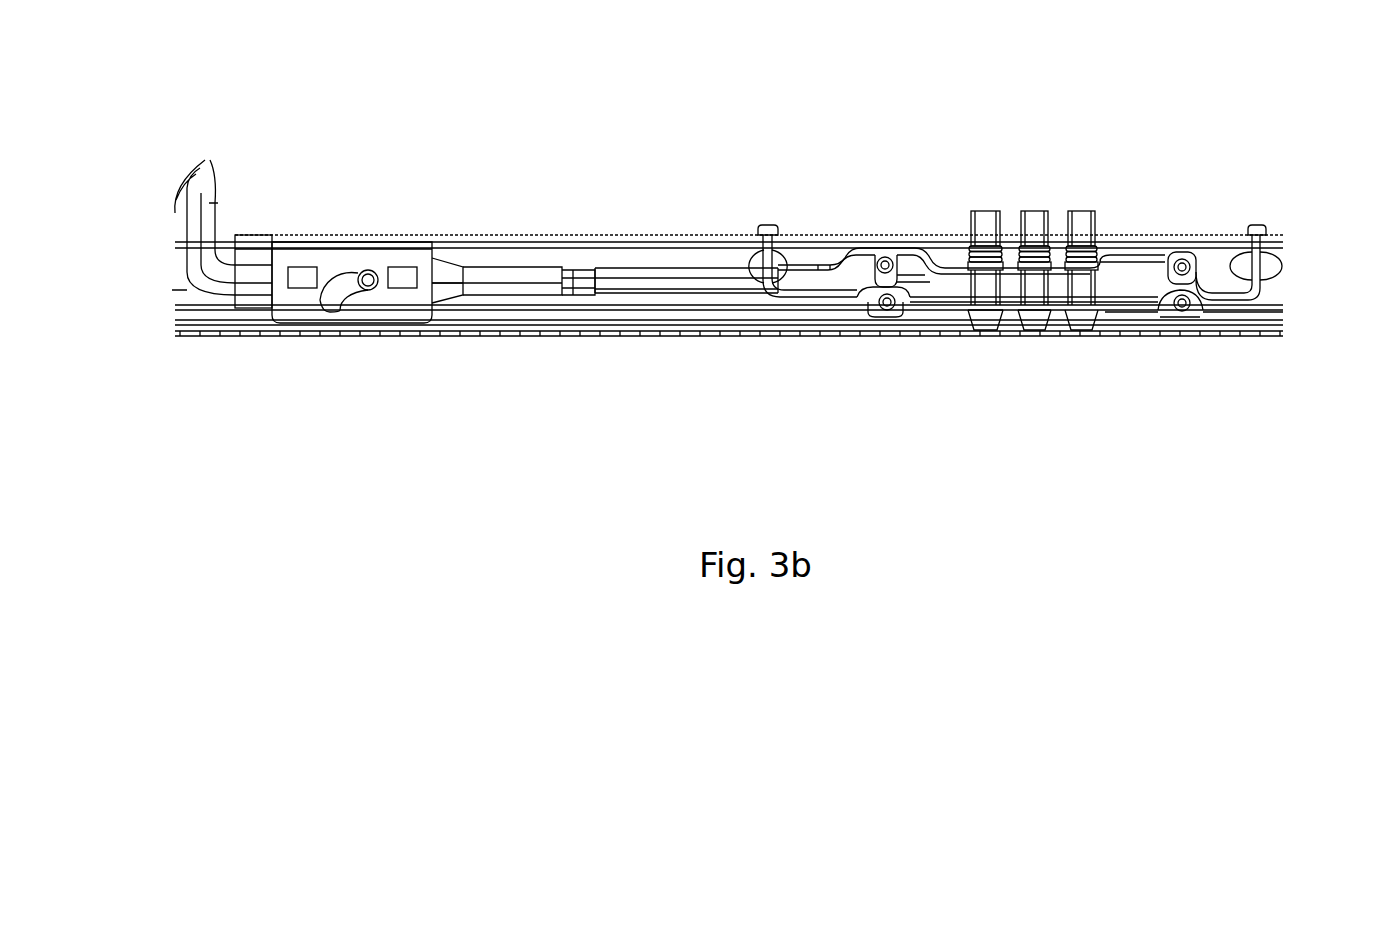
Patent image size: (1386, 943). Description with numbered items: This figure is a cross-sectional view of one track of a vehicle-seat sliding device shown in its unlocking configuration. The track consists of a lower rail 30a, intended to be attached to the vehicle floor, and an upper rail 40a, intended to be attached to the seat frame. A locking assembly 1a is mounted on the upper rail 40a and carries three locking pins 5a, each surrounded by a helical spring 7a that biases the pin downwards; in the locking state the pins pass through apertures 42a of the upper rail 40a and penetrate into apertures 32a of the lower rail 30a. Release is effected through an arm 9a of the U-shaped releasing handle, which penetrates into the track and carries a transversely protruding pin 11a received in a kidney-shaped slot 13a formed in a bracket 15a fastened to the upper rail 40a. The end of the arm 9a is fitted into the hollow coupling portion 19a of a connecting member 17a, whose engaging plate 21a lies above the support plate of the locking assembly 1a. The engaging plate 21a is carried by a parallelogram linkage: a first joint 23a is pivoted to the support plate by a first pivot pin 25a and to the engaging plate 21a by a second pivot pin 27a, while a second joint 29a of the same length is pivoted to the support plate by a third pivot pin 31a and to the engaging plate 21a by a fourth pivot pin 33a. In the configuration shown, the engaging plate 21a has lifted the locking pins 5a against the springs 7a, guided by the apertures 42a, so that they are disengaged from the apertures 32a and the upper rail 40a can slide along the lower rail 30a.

The locking assembly 1a is at (1120, 225).
The locking pin 5a is at (1033, 210).
The helical spring 7a is at (1055, 235).
The arm 9a is at (210, 200).
The transversely protruding pin 11a is at (365, 270).
The kidney-shaped slot 13a is at (300, 300).
The bracket 15a is at (400, 317).
The connecting member 17a is at (712, 311).
The coupling portion 19a is at (640, 283).
The engaging plate 21a is at (930, 250).
The first joint 23a is at (908, 285).
The first pivot pin 25a is at (880, 305).
The second pivot pin 27a is at (877, 268).
The second joint 29a is at (1205, 293).
The lower rail 30a is at (528, 337).
The third pivot pin 31a is at (1180, 311).
The aperture 32a is at (1022, 333).
The fourth pivot pin 33a is at (1182, 258).
The upper rail 40a is at (505, 237).
The aperture 42a is at (980, 246).